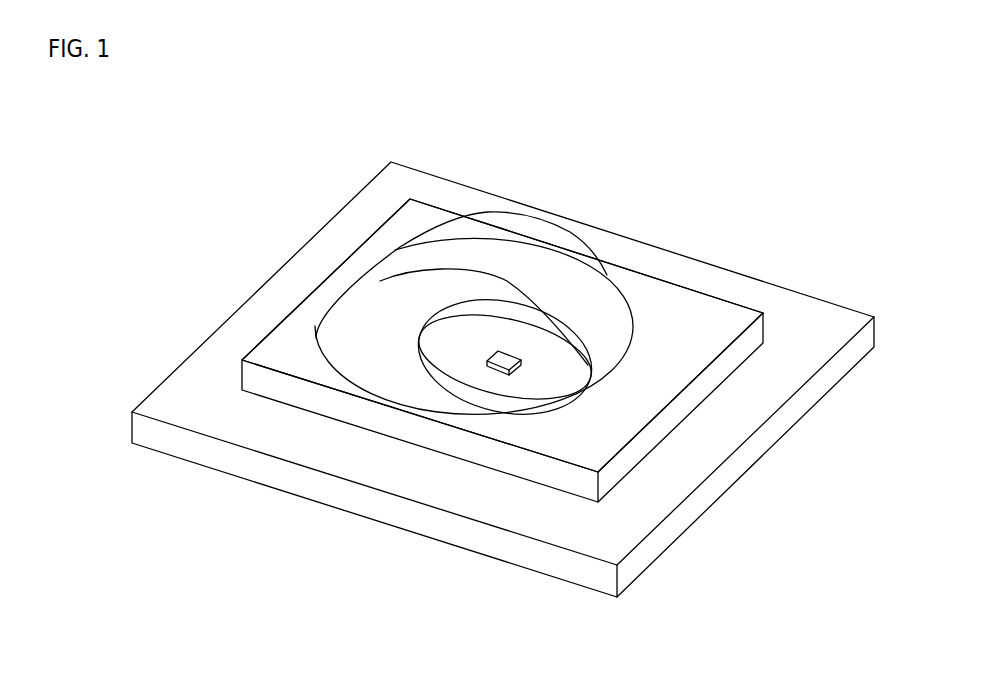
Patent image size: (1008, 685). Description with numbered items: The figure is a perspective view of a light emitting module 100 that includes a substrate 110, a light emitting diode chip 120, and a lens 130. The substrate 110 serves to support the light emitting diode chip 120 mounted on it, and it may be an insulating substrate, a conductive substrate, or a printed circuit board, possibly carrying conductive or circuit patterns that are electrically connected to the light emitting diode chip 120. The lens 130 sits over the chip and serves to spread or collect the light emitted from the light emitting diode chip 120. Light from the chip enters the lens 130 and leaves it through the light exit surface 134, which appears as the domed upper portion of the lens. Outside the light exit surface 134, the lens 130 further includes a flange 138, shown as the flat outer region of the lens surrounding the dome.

The light emitting module 100 is at (363, 152).
The substrate 110 is at (192, 445).
The light emitting diode chip 120 is at (486, 363).
The lens 130 is at (638, 263).
The light exit surface 134 is at (537, 212).
The flange 138 is at (677, 297).